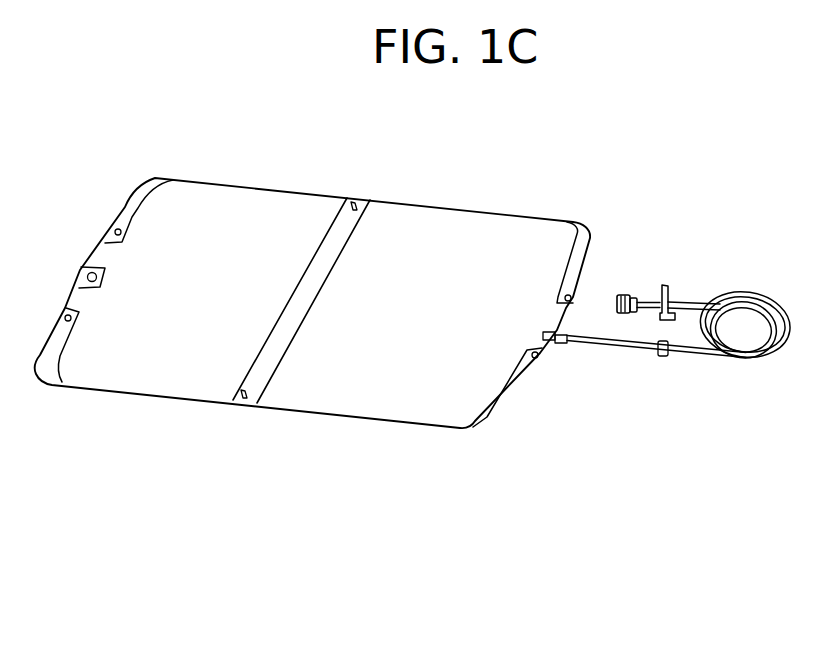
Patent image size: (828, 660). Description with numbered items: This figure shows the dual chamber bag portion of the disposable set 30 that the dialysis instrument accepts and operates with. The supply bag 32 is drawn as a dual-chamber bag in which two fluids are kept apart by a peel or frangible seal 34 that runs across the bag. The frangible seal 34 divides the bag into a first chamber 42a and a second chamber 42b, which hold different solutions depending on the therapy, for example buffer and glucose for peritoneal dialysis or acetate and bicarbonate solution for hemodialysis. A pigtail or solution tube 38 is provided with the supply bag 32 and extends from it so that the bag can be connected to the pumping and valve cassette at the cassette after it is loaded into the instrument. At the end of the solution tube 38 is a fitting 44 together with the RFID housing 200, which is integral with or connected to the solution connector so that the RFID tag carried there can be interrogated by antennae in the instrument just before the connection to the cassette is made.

The disposable set 30 is at (236, 52).
The supply bag 32 is at (155, 177).
The frangible seal 34 is at (355, 222).
The chamber 42a is at (225, 289).
The chamber 42b is at (430, 308).
The connector 44 is at (623, 295).
The RFID housing 200 is at (673, 278).
The solution tube 38 is at (773, 362).